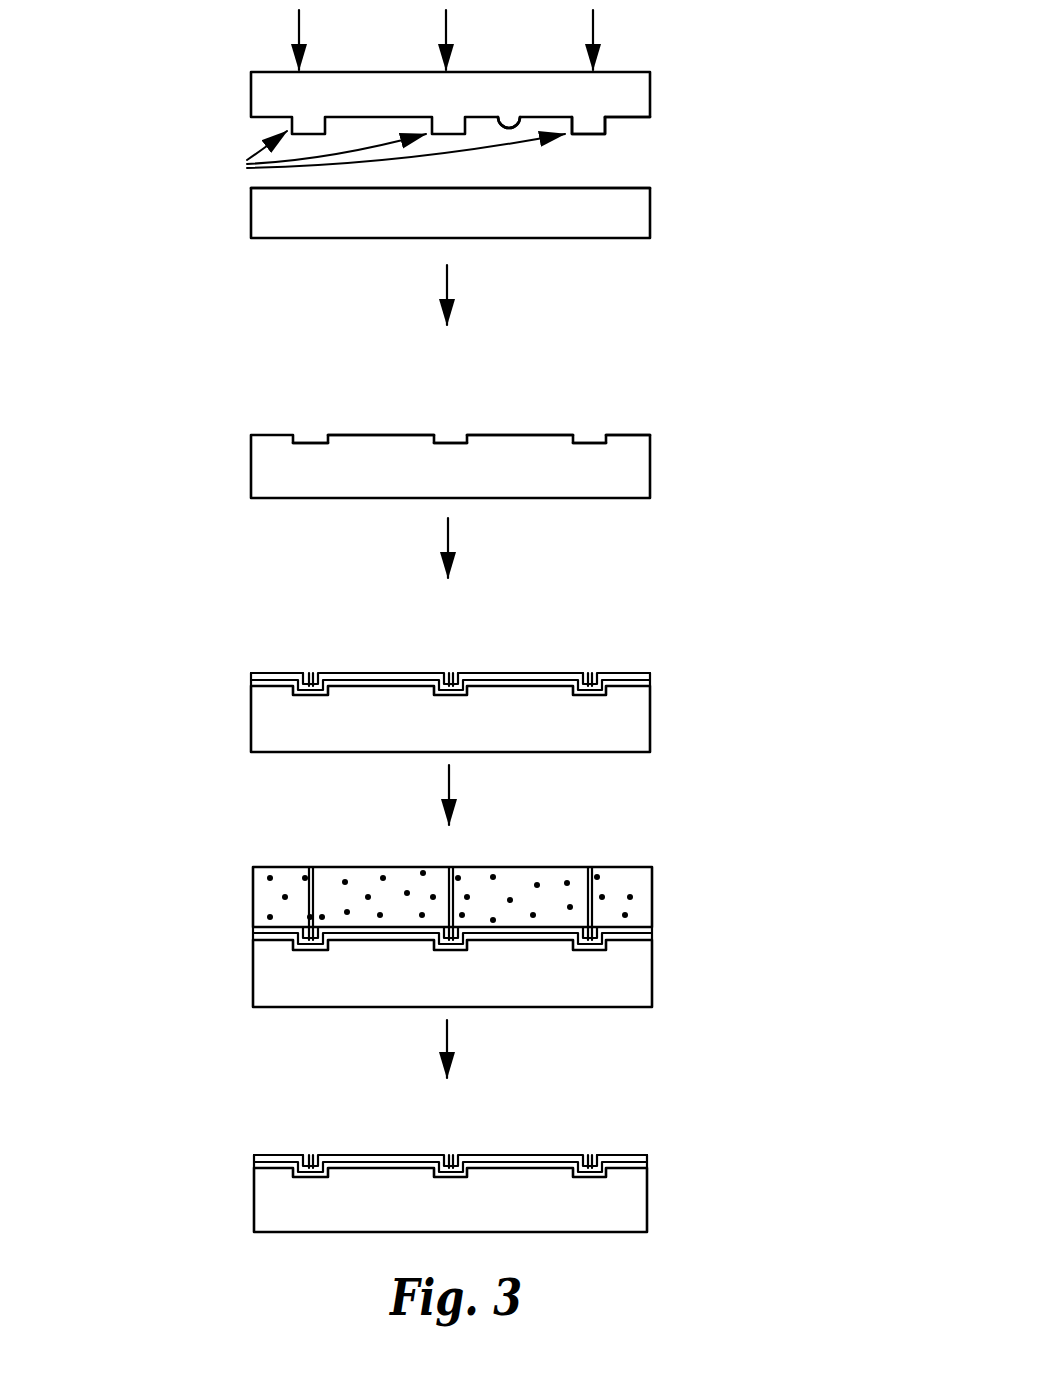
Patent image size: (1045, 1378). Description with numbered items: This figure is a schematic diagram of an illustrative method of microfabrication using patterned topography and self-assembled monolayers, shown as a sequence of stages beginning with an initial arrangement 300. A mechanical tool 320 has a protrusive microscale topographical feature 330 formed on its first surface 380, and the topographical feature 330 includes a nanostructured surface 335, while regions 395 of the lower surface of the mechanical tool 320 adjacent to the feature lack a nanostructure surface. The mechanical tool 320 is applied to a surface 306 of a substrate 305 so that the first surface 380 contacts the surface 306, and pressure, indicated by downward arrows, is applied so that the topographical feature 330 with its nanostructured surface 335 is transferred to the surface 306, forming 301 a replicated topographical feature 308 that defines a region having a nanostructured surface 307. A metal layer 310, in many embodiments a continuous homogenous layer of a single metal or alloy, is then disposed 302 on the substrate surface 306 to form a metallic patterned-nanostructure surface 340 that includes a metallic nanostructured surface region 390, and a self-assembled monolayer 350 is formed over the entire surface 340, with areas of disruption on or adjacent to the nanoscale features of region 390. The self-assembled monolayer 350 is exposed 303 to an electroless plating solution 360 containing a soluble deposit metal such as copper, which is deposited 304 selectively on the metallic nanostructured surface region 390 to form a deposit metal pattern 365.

The first process stage (imprinting) 300 is at (188, 126).
The forming step 301 is at (188, 457).
The disposing step 302 is at (190, 710).
The exposing step 303 is at (190, 945).
The depositing step 304 is at (190, 1172).
The substrate 305 is at (648, 212).
The surface of the substrate 306 is at (630, 187).
The nanostructured surface 307 is at (450, 440).
The replicated topographical feature 308 is at (301, 428).
The metal layer 310 is at (650, 682).
The mechanical tool 320 is at (641, 93).
The protrusive microscale topographical feature 330 is at (376, 154).
The nanostructured surface 335 is at (594, 136).
The metallic patterned-nanostructure surface 340 is at (490, 677).
The self-assembled monolayer 350 is at (283, 675).
The electroless plating solution 360 is at (647, 900).
The deposit metal pattern 365 is at (312, 1157).
The first surface of the mechanical tool 380 is at (634, 119).
The metallic nanostructured surface region 390 is at (452, 677).
The regions lacking nanostructure surface 395 is at (521, 125).